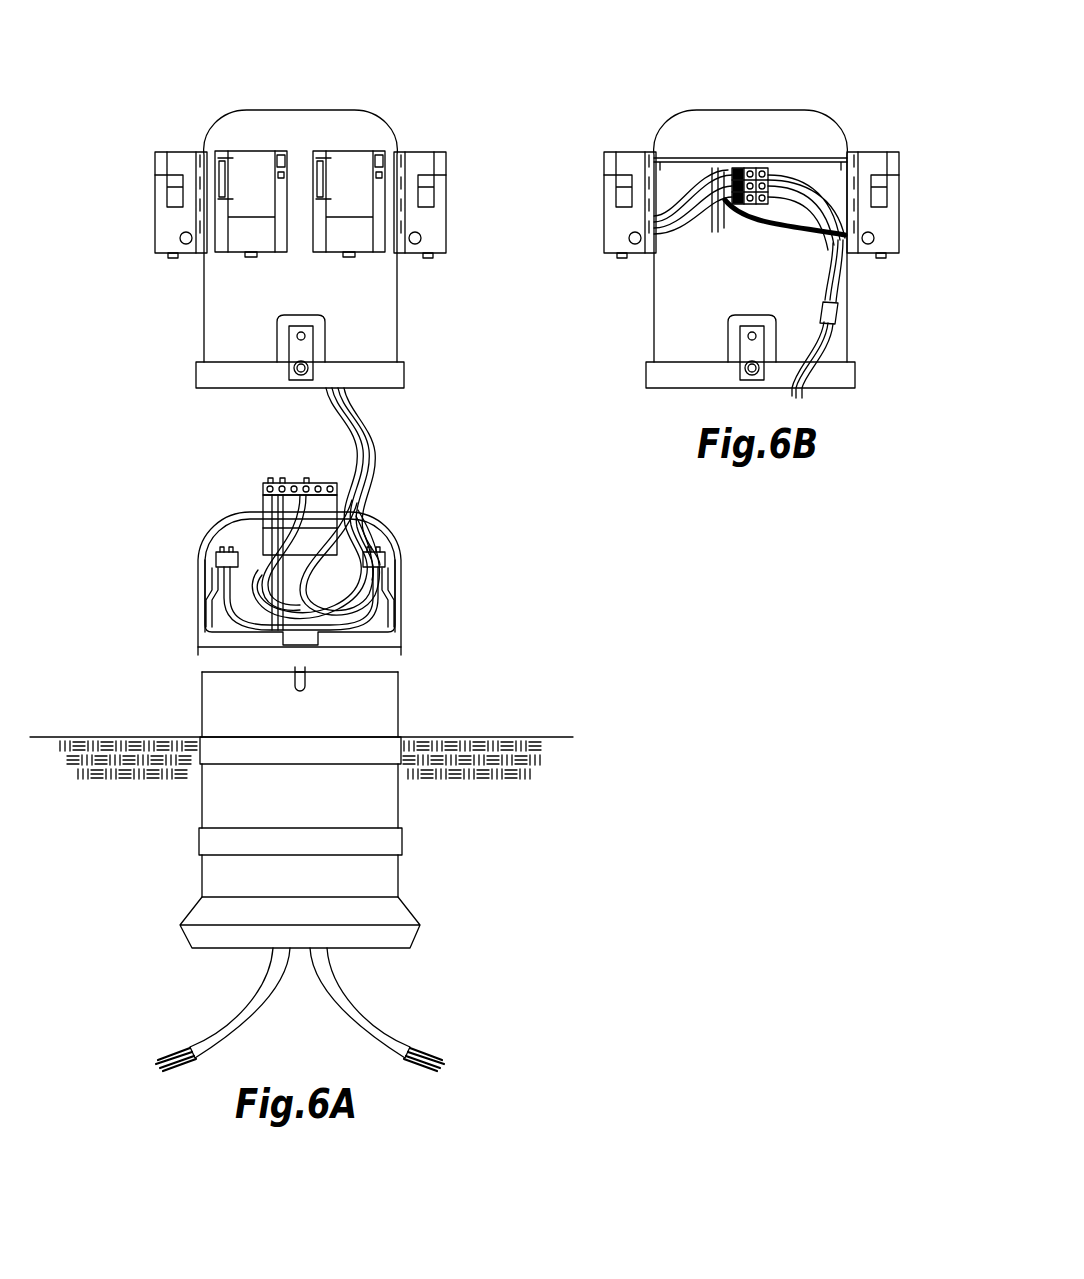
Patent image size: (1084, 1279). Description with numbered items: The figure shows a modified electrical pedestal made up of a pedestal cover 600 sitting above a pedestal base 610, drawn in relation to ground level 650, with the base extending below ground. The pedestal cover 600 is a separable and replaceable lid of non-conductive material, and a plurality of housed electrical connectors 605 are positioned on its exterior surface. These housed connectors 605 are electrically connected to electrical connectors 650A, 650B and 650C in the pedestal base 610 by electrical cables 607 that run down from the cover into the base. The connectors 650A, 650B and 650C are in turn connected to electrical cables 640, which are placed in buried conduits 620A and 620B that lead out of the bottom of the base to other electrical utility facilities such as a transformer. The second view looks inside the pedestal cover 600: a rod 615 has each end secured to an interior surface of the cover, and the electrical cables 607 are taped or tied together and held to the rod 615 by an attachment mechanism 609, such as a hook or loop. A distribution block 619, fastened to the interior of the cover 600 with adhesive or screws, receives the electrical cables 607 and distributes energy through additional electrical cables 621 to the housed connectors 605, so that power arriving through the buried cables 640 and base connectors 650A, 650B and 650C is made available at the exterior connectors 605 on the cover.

In FIG. 6A, the pedestal cover 600 is at (174, 304).
In FIG. 6A, the housed electrical connectors 605 is at (257, 150).
In FIG. 6B, the housed electrical connectors 605 is at (606, 172).
In FIG. 6A, the electrical cables 607 is at (360, 452).
In FIG. 6B, the electrical cables 607 is at (838, 275).
In FIG. 6B, the attachment mechanism 609 is at (708, 165).
In FIG. 6A, the pedestal base 610 is at (403, 655).
In FIG. 6B, the rod 615 is at (680, 158).
In FIG. 6B, the distribution block 619 is at (748, 165).
In FIG. 6A, the conduit 620A is at (355, 1010).
In FIG. 6A, the conduit 620B is at (245, 1010).
In FIG. 6B, the additional electrical cables 621 is at (748, 236).
In FIG. 6A, the electrical cables 640 is at (172, 1052).
In FIG. 6A, the ground level 650 is at (453, 737).
In FIG. 6A, the electrical connector 650A is at (218, 560).
In FIG. 6A, the electrical connector 650B is at (262, 484).
In FIG. 6A, the electrical connector 650C is at (383, 560).